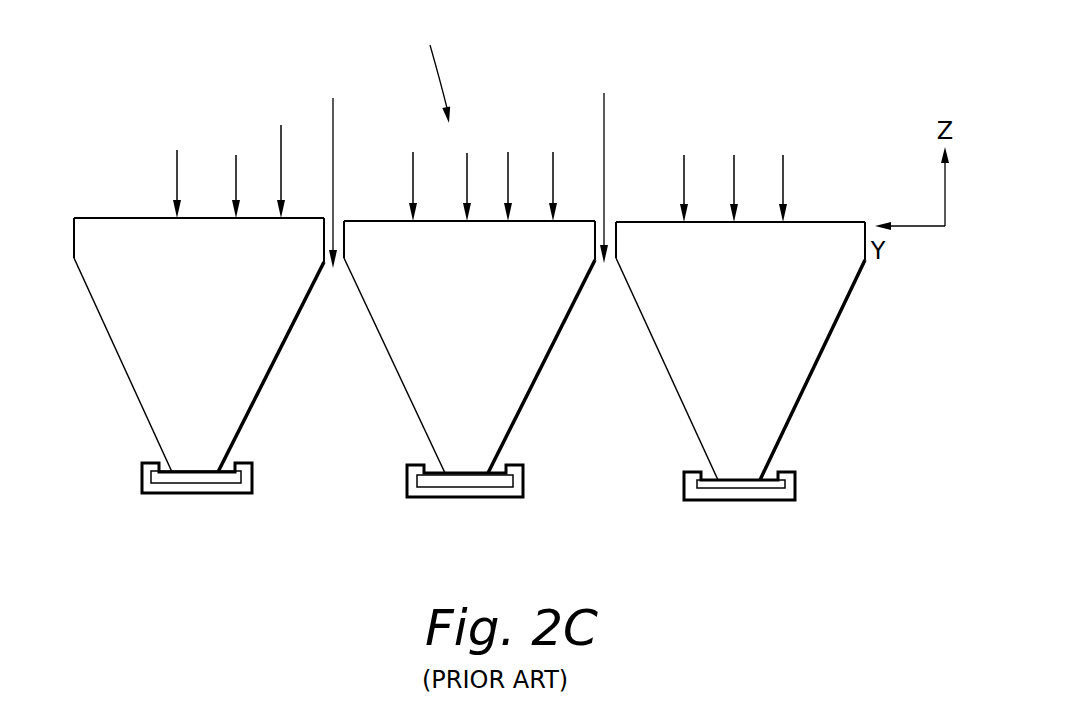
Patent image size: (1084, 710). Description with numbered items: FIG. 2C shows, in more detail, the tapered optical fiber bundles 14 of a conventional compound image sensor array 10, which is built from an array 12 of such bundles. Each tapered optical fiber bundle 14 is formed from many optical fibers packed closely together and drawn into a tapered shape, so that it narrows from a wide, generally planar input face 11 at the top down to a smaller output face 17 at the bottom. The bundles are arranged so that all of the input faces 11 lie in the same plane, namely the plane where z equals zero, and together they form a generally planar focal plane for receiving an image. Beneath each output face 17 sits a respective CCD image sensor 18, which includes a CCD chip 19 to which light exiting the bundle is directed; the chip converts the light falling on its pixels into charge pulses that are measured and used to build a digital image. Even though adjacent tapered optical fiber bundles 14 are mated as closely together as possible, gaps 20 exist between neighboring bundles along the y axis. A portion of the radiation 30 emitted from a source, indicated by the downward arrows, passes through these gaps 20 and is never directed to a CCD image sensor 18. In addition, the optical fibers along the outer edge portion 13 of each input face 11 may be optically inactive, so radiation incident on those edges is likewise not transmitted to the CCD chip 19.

The compound image sensor array 10 is at (850, 145).
The input face 11 is at (143, 218).
The array 12 is at (204, 160).
The outer edge portion 13 is at (311, 218).
The tapered optical fiber bundle 14 is at (408, 368).
The output face 17 is at (203, 470).
The CCD image sensor 18 is at (141, 478).
The CCD chip 19 is at (189, 480).
The gap 20 is at (338, 257).
The radiation 30 is at (431, 70).